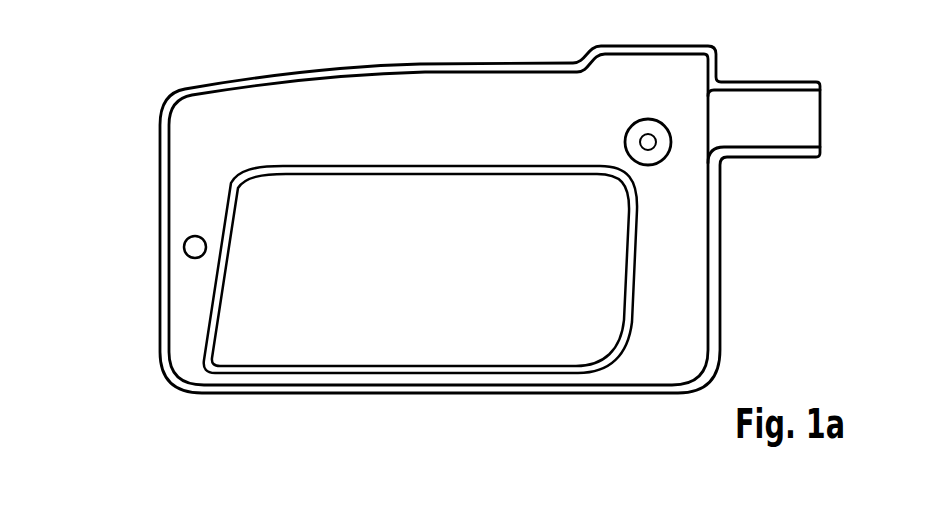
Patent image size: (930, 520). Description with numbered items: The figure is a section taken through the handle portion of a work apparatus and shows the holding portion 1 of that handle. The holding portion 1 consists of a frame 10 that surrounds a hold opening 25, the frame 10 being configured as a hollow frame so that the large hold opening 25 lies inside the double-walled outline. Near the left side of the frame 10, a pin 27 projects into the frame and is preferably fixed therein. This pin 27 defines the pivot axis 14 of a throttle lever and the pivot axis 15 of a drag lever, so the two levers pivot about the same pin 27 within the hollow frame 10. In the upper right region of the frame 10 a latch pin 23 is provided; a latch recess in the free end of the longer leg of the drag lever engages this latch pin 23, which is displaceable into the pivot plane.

The holding portion 1 is at (435, 200).
The frame 10 is at (697, 267).
The pivot axis of throttle lever 14 is at (128, 273).
The pivot axis of drag lever 15 is at (154, 275).
The latch pin 23 is at (648, 142).
The hold opening 25 is at (428, 279).
The pin 27 is at (197, 258).